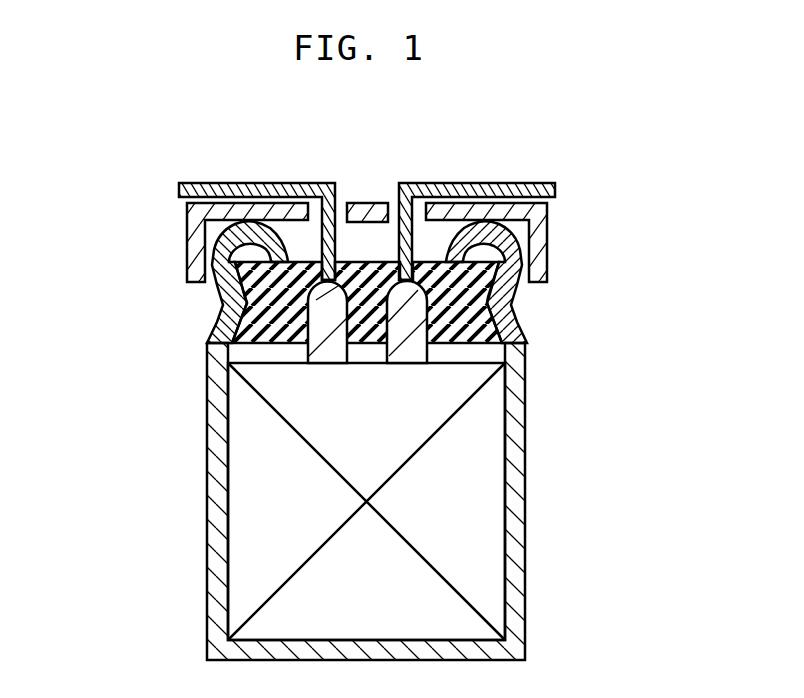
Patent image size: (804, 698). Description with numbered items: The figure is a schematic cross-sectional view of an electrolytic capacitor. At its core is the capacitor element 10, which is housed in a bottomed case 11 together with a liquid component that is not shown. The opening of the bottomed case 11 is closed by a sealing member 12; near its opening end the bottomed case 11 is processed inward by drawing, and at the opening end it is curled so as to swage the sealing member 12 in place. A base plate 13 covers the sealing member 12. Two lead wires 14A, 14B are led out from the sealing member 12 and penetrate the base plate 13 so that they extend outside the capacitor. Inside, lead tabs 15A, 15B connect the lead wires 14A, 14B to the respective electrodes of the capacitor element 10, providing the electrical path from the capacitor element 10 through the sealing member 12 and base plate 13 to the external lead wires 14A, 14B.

The capacitor element 10 is at (267, 478).
The bottomed case 11 is at (518, 448).
The sealing member 12 is at (460, 308).
The base plate 13 is at (195, 228).
The lead wire 14A is at (253, 188).
The lead wire 14B is at (486, 188).
The lead tab 15A is at (327, 312).
The lead tab 15B is at (405, 333).